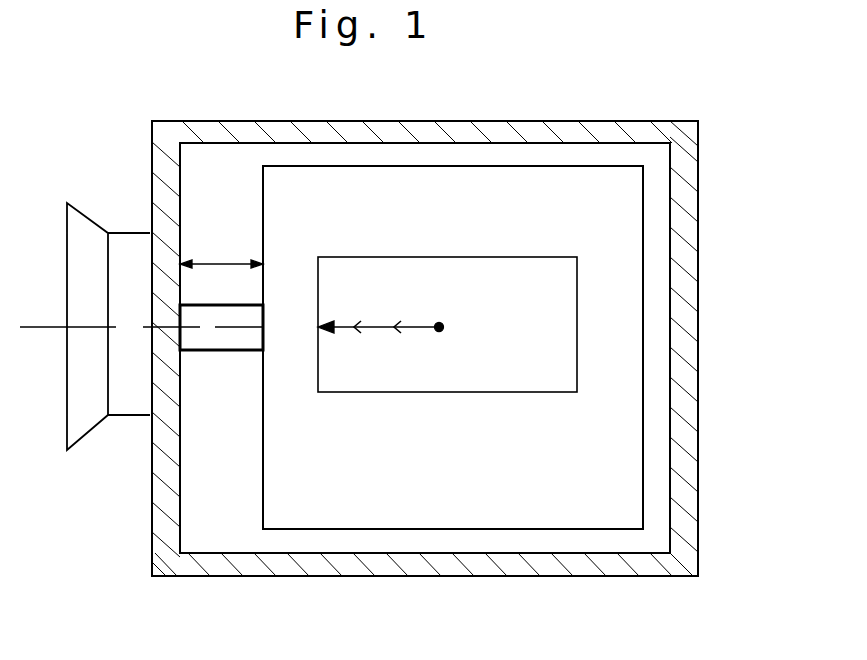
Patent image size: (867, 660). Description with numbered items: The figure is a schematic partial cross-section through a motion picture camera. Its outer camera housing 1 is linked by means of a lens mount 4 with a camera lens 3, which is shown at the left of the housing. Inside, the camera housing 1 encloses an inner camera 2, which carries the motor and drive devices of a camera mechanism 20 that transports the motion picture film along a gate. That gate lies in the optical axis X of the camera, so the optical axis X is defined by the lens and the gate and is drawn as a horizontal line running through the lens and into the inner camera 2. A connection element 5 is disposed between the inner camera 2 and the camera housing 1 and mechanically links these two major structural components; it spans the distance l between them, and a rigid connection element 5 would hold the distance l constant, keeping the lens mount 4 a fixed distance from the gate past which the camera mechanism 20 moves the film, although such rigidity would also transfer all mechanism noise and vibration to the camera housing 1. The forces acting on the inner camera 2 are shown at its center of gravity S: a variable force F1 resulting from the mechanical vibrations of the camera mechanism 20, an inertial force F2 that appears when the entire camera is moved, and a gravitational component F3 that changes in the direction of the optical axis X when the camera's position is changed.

The camera housing 1 is at (249, 126).
The inner camera 2 is at (622, 228).
The camera lens 3 is at (77, 415).
The lens mount 4 is at (148, 226).
The connection element 5 is at (223, 337).
The camera mechanism 20 is at (468, 374).
The center of gravity S is at (446, 322).
The variable force F1 is at (337, 323).
The inertial force F2 is at (377, 328).
The gravitational component F3 is at (417, 321).
The optical axis X is at (131, 325).
The distance l is at (221, 250).